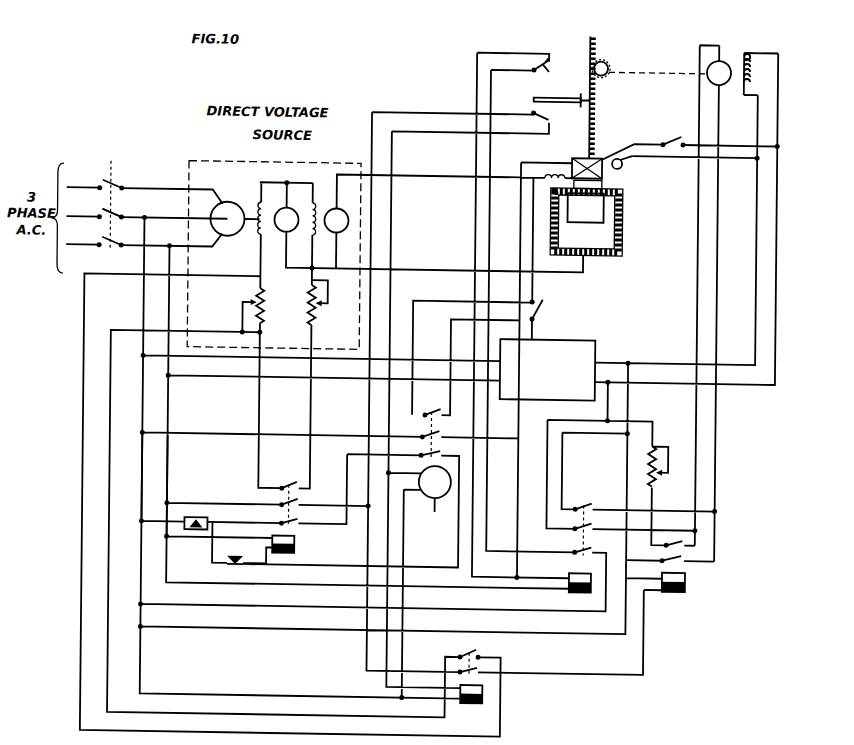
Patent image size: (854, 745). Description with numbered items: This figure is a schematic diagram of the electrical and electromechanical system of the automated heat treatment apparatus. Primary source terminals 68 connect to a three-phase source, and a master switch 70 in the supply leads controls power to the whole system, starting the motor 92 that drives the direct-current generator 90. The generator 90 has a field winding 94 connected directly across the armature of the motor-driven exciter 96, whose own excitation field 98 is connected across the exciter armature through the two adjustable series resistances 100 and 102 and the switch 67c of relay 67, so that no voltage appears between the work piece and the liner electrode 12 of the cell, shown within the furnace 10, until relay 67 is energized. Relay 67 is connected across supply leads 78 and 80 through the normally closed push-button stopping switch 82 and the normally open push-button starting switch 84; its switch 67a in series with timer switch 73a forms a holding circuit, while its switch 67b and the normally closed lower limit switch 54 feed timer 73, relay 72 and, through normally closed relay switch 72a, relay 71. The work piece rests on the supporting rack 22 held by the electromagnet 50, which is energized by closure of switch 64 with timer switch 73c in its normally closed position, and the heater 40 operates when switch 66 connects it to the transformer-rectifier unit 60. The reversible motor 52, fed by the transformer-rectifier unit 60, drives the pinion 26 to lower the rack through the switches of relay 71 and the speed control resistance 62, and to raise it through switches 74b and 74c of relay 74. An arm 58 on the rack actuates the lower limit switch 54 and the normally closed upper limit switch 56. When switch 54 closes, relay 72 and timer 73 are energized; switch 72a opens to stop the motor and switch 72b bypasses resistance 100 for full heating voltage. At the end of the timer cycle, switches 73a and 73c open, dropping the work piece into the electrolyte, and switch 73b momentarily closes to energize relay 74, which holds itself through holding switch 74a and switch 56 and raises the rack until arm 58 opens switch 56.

The primary source terminals 68 is at (109, 241).
The master switch 70 is at (121, 201).
The motor 92 is at (231, 206).
The exciter 96 is at (289, 187).
The direct-current generator 90 is at (337, 209).
The exciter field winding 98 is at (260, 237).
The generator field winding 94 is at (312, 245).
The adjustable series resistance 100 is at (263, 310).
The adjustable series resistance 102 is at (314, 315).
The upper limit switch 56 is at (546, 62).
The arm 58 is at (545, 98).
The lower limit switch 54 is at (547, 117).
The supporting rack 22 is at (593, 44).
The pinion 26 is at (606, 66).
The motor 52 is at (722, 57).
The switch 66 is at (671, 139).
The electromagnet 50 is at (580, 156).
The heater 40 is at (622, 164).
The liner electrode 12 is at (618, 212).
The furnace 10 is at (621, 240).
The switch 64 is at (540, 305).
The transformer-rectifier unit 60 is at (595, 338).
The speed control resistance 62 is at (655, 480).
The timer switch 73c is at (435, 412).
The timer switch 73b is at (438, 436).
The timer switch 73a is at (440, 457).
The timer 73 is at (435, 500).
The relay switch 74c is at (584, 502).
The relay switch 74b is at (586, 524).
The holding switch 74a is at (588, 548).
The relay 74 is at (571, 574).
The relay 71 is at (676, 588).
The supply lead 78 is at (141, 478).
The supply lead 80 is at (170, 475).
The push-button stopping switch 82 is at (203, 521).
The push-button starting switch 84 is at (226, 563).
The relay switch 67c is at (289, 483).
The relay switch 67b is at (304, 504).
The relay switch 67a is at (304, 524).
The relay 67 is at (297, 545).
The relay switch 72b is at (477, 652).
The relay switch 72a is at (483, 674).
The relay 72 is at (468, 703).